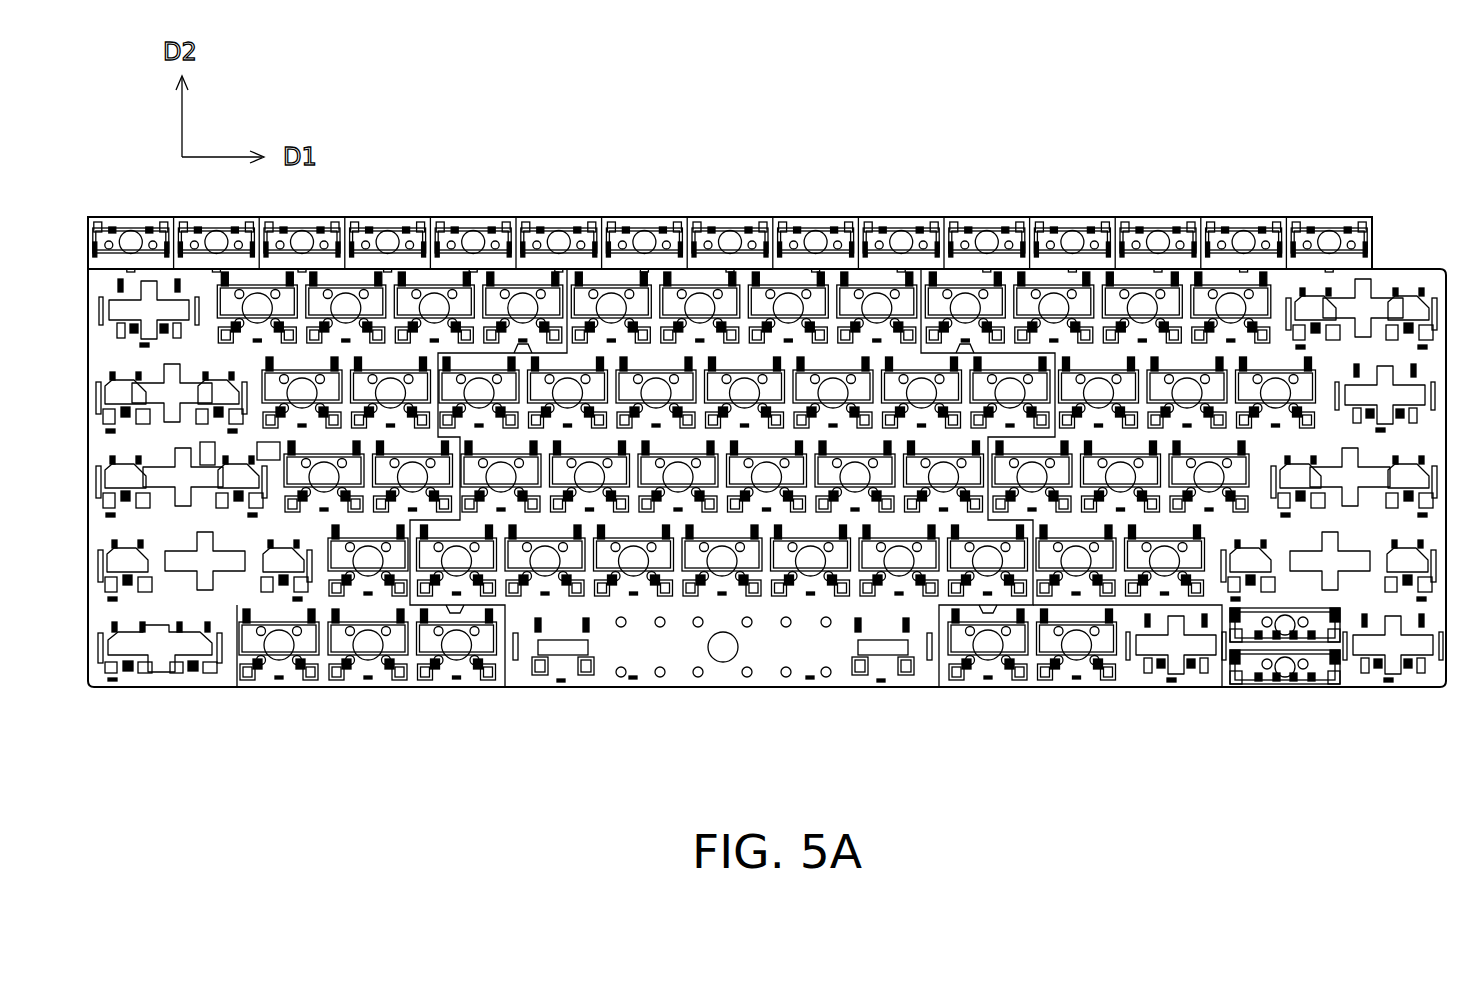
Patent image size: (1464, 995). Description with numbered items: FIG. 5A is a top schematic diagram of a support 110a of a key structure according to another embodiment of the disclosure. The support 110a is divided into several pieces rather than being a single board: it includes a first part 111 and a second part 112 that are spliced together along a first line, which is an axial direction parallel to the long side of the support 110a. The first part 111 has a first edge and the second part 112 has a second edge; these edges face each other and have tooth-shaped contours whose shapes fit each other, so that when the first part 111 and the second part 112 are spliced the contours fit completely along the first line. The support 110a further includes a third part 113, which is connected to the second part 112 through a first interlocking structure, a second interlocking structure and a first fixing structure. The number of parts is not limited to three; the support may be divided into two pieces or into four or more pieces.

The support 110a is at (1236, 27).
The first part 111 is at (365, 677).
The second part 112 is at (767, 677).
The third part 113 is at (1162, 677).